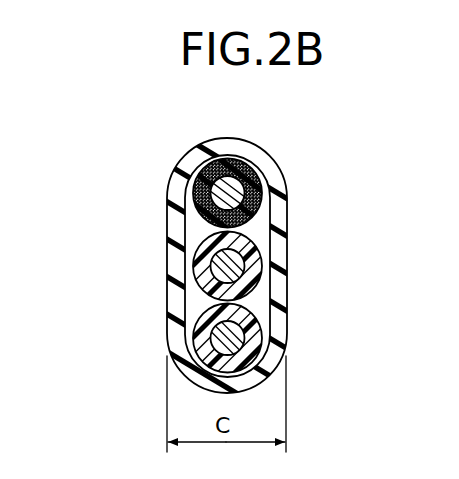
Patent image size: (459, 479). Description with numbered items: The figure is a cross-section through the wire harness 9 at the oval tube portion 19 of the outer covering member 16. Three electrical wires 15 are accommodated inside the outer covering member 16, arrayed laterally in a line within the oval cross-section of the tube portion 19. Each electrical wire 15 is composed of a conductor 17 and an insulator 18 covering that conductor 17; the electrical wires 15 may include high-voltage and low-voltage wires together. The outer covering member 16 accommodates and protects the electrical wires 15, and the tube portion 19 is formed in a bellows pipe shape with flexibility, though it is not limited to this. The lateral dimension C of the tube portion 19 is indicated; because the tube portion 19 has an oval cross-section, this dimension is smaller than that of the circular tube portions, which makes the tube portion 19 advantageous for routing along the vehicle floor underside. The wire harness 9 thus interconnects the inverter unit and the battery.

The wire harness 9 is at (320, 178).
The electrical wire 15 is at (102, 163).
The outer covering member 16 is at (291, 272).
The conductor 17 is at (196, 189).
The insulator 18 is at (209, 227).
The tube portion 19 is at (277, 238).